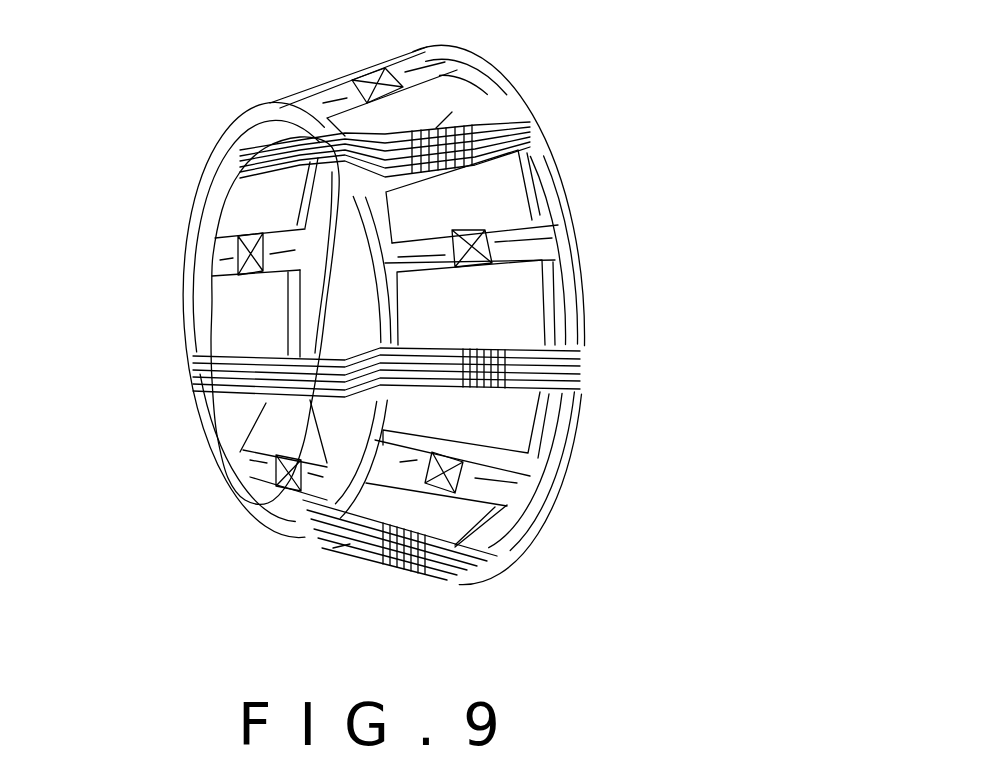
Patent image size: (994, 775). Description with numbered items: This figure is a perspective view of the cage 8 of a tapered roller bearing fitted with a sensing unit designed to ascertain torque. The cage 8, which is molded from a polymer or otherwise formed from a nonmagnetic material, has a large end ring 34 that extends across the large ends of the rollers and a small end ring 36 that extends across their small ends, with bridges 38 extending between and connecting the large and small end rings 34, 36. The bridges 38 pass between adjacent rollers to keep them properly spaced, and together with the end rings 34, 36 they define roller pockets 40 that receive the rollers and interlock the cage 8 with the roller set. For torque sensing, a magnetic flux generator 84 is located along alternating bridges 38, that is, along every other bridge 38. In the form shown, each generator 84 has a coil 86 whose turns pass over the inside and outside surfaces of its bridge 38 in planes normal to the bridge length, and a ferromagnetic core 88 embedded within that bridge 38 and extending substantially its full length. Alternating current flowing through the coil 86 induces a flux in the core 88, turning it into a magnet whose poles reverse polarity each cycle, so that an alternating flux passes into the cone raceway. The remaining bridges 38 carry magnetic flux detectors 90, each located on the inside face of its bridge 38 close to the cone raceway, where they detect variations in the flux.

The cage 8 is at (173, 406).
The large end ring 34 is at (562, 415).
The small end ring 36 is at (205, 215).
The bridges 38 is at (425, 345).
The roller pockets 40 is at (237, 307).
The magnetic flux generator 84 is at (513, 100).
The coil 86 is at (462, 170).
The ferromagnetic core 88 is at (437, 125).
The magnetic flux detectors 90 is at (493, 241).